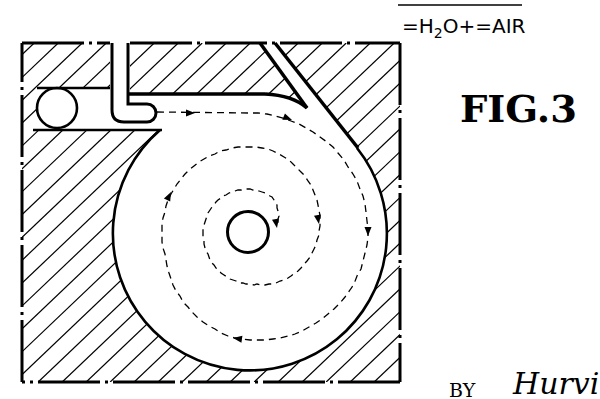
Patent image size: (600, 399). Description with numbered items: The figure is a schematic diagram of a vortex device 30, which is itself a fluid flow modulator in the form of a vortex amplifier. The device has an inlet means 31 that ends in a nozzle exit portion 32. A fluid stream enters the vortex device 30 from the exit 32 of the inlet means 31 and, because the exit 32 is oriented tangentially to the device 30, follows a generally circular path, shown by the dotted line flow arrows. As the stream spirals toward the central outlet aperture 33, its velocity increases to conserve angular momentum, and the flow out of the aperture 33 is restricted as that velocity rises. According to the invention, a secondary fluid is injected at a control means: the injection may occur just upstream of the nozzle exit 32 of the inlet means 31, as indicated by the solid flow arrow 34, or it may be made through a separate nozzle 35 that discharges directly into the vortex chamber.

The vortex device 30 is at (389, 215).
The inlet means 31 is at (135, 90).
The nozzle exit portion 32 is at (172, 108).
The outlet aperture 33 is at (258, 249).
The solid flow arrow 34 is at (110, 62).
The separate nozzle 35 is at (268, 52).